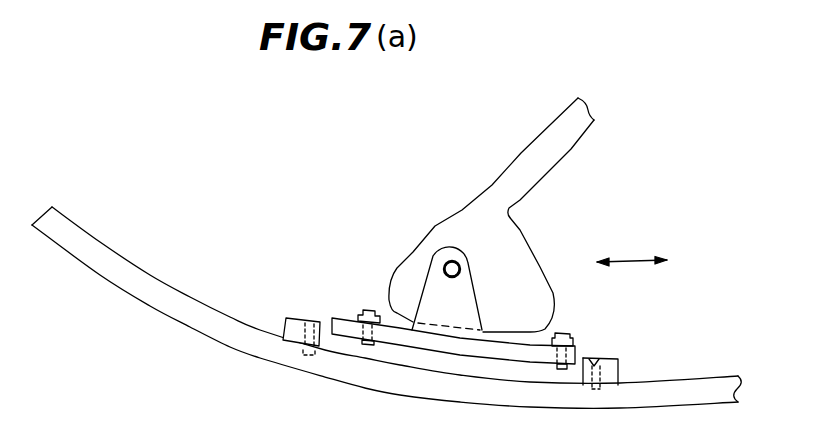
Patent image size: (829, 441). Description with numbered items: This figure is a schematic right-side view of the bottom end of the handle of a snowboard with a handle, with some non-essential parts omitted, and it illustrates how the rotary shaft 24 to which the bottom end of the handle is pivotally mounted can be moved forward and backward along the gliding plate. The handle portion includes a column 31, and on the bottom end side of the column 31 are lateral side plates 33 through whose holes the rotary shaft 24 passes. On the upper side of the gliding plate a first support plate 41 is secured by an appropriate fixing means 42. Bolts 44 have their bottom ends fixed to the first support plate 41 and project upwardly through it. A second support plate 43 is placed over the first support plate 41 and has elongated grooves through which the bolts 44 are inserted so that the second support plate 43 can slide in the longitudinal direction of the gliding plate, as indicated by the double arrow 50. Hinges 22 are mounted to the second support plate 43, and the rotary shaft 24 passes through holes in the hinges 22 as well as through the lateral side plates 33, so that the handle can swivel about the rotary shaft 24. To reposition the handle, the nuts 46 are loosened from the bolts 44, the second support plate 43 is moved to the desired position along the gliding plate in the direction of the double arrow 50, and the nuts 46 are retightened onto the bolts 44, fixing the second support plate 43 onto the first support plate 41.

The hinge 22 is at (466, 262).
The rotary shaft 24 is at (458, 272).
The column 31 is at (492, 183).
The lateral side plate 33 is at (417, 278).
The first support plate 41 is at (285, 332).
The fixing means 42 is at (300, 316).
The second support plate 43 is at (507, 352).
The bolt 44 is at (357, 311).
The nut 46 is at (323, 320).
The double arrow 50 is at (630, 258).